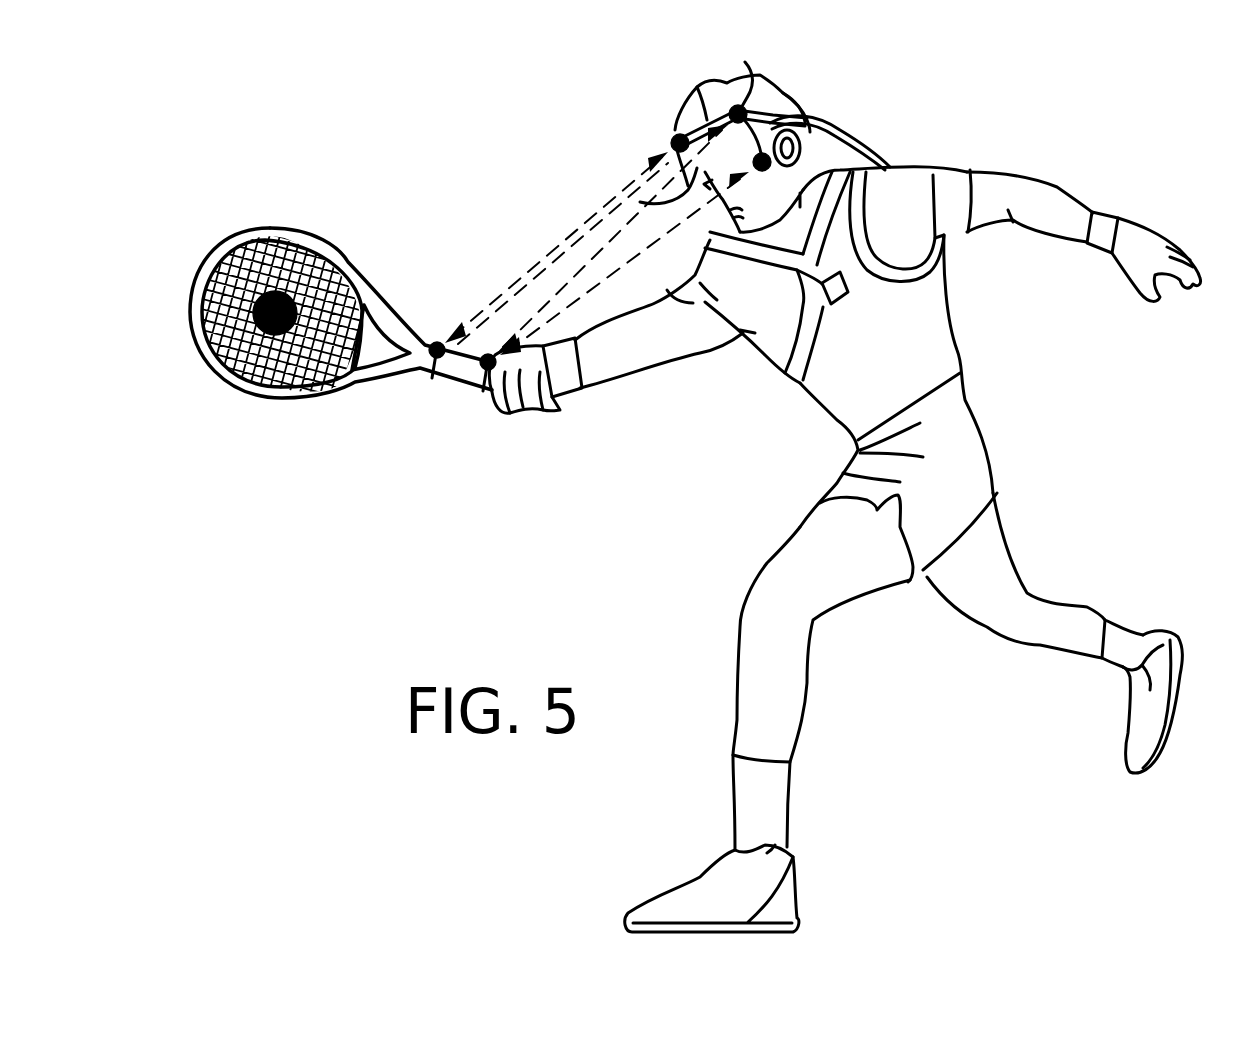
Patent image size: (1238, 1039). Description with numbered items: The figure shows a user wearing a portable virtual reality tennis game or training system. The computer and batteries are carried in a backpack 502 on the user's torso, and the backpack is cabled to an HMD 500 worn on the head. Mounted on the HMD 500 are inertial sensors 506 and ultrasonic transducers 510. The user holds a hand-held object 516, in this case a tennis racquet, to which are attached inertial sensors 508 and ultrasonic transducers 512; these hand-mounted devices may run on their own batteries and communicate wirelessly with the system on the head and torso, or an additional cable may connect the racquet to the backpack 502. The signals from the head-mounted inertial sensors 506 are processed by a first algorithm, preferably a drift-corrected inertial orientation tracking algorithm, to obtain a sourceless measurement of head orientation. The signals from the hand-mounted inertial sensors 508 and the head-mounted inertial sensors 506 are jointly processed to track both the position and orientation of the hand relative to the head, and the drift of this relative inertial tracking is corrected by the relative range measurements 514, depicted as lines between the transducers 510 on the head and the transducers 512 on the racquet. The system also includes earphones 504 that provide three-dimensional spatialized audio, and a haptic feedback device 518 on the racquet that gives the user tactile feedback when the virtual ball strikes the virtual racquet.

The HMD 500 is at (643, 200).
The backpack 502 is at (947, 263).
The earphones 504 is at (793, 148).
The inertial sensors 506 is at (707, 115).
The inertial sensors 508 is at (462, 362).
The ultrasonic transducers 510 is at (738, 112).
The ultrasonic transducers 512 is at (433, 362).
The relative range measurements 514 is at (538, 262).
The hand-held object 516 is at (270, 228).
The haptic feedback device 518 is at (250, 290).